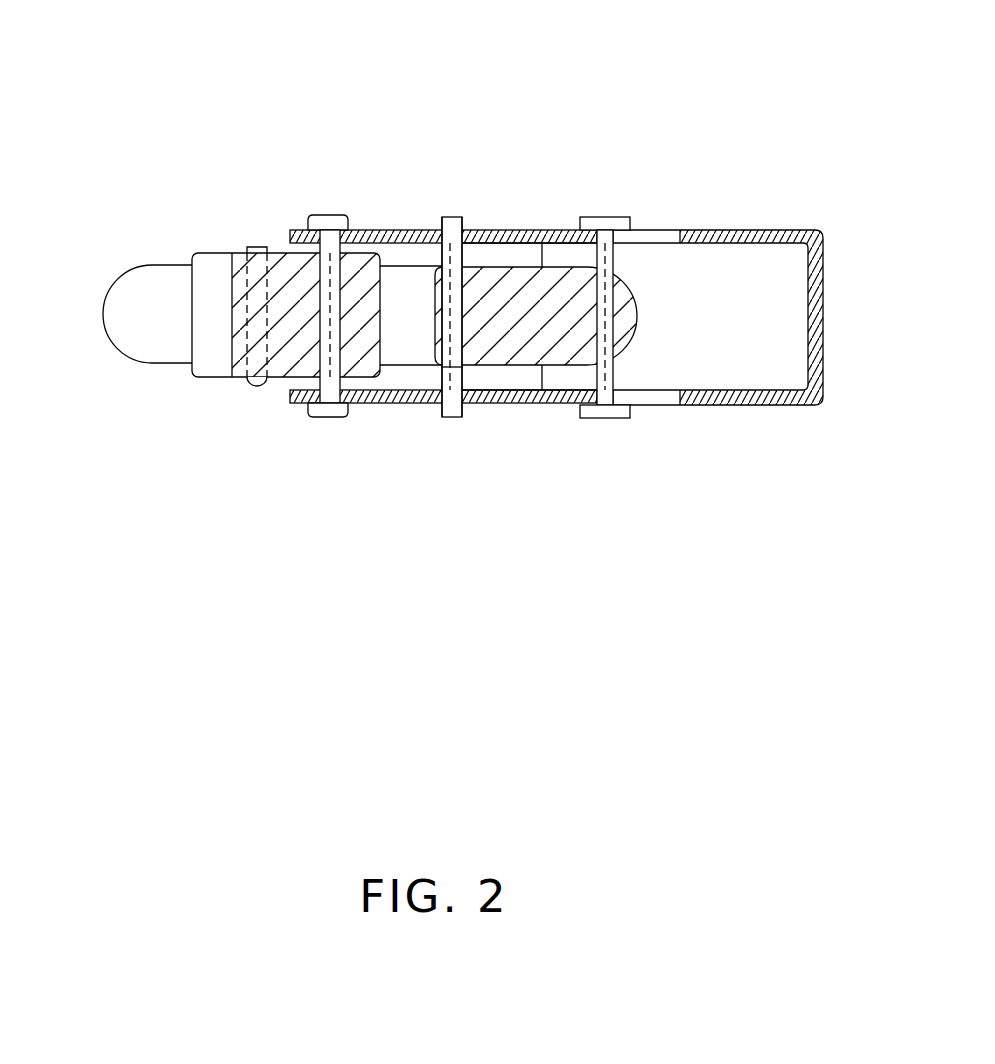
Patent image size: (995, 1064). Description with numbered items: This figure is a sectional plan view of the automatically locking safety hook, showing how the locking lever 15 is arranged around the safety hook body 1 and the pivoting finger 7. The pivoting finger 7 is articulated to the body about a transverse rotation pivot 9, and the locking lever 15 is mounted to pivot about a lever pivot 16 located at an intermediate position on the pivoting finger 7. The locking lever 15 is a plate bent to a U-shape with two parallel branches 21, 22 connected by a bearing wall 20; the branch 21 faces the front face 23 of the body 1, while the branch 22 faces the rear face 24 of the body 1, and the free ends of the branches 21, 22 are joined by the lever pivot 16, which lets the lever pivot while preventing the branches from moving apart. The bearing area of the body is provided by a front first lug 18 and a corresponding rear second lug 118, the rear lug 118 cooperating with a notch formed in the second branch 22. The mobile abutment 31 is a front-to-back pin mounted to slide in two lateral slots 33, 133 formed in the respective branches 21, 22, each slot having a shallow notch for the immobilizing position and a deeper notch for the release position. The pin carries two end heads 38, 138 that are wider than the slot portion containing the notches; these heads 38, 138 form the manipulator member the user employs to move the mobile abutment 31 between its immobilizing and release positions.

The safety hook body 1 is at (167, 352).
The pivoting finger 7 is at (195, 257).
The transverse rotation pivot 9 is at (252, 246).
The lever pivot 16 is at (322, 216).
The rear face 24 is at (397, 253).
The rear second lug 118 is at (452, 217).
The branch 22 is at (503, 230).
The head 138 is at (588, 217).
The mobile abutment 31 is at (621, 220).
The lateral slot 133 is at (662, 240).
The locking lever 15 is at (799, 225).
The bearing wall 20 is at (836, 355).
The front face 23 is at (419, 378).
The front first lug 18 is at (455, 418).
The branch 21 is at (510, 396).
The head 38 is at (608, 419).
The lateral slot 33 is at (668, 398).